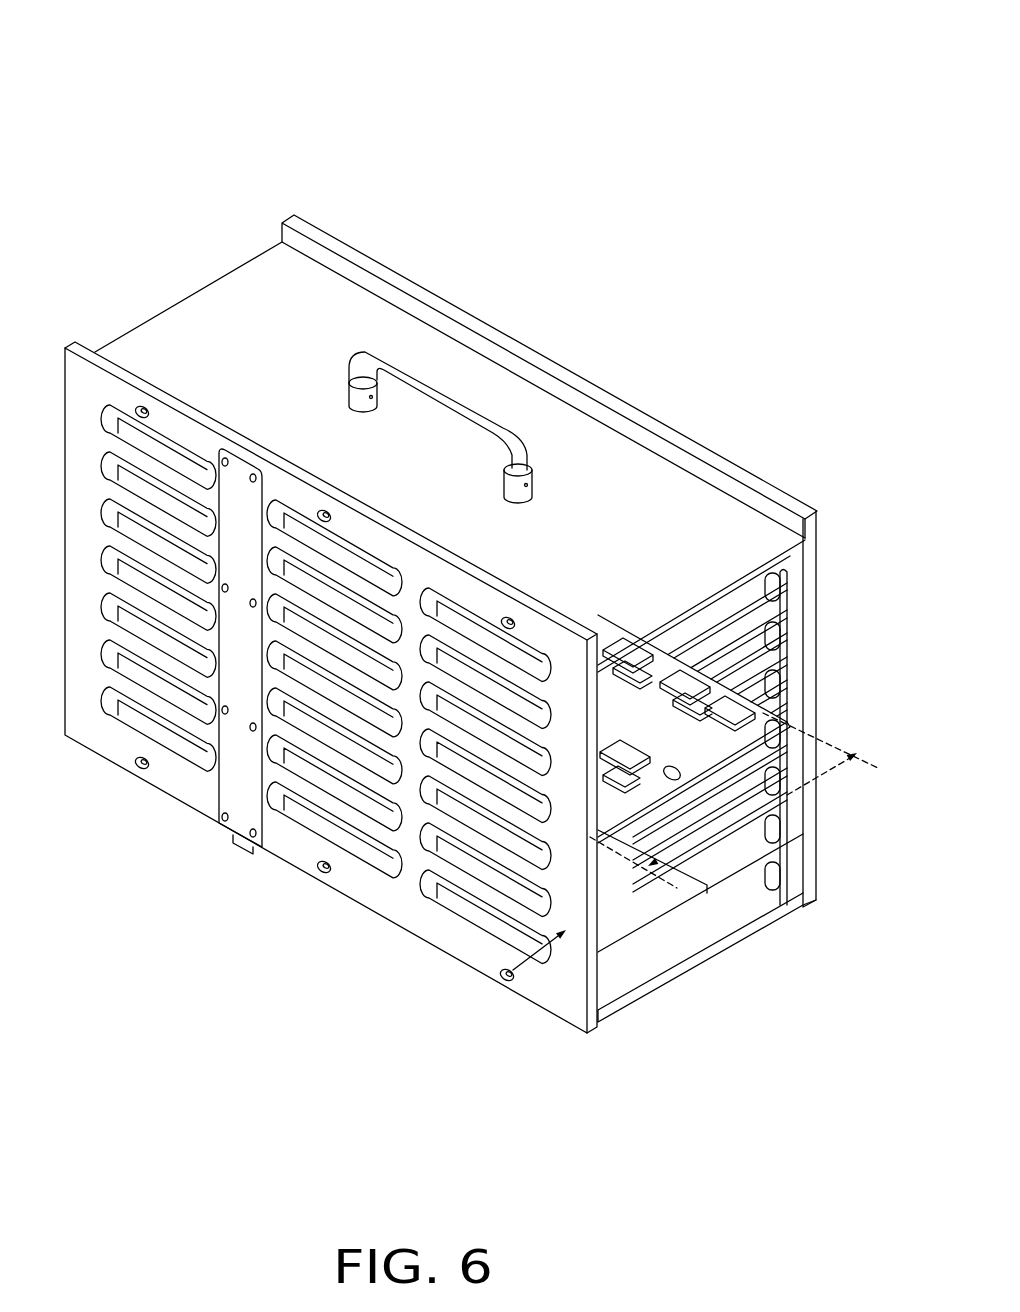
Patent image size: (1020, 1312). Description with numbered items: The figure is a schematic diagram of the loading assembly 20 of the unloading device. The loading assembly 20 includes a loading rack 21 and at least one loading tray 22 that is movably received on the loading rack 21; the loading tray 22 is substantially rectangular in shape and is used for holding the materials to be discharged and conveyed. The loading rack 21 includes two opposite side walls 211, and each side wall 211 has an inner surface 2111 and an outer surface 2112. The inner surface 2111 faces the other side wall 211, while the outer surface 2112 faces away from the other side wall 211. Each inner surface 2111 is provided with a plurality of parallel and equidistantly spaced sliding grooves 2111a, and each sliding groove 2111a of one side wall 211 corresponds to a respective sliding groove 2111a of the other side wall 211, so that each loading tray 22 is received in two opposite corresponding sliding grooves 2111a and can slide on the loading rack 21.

The loading assembly 20 is at (463, 35).
The loading rack 21 is at (678, 507).
The loading tray 22 is at (762, 717).
The side wall 211 is at (593, 950).
The inner surface 2111 is at (773, 800).
The sliding groove 2111a is at (772, 770).
The outer surface 2112 is at (500, 980).